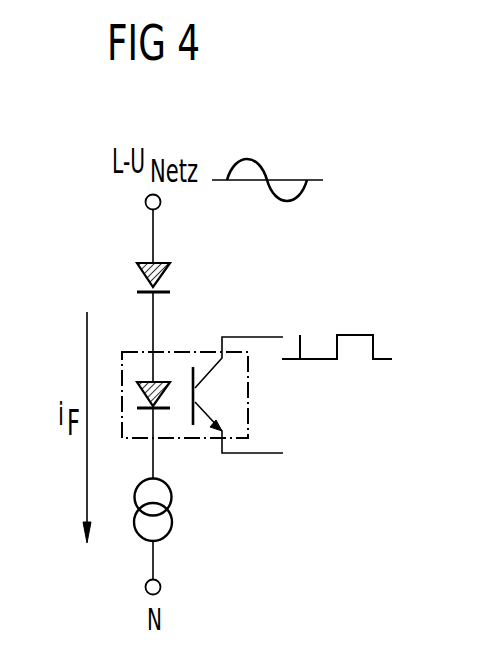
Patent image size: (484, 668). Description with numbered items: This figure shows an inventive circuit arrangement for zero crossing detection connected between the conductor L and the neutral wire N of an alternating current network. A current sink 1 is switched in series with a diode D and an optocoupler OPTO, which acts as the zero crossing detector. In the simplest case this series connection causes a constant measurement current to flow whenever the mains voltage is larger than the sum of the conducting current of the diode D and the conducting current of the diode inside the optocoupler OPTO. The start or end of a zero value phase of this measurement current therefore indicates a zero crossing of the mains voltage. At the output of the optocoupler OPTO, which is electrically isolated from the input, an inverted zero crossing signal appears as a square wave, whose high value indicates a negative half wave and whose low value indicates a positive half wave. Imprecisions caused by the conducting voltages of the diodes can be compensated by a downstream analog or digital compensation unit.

The current sink 1 is at (172, 519).
The diode D is at (165, 269).
The optocoupler OPTO is at (257, 394).